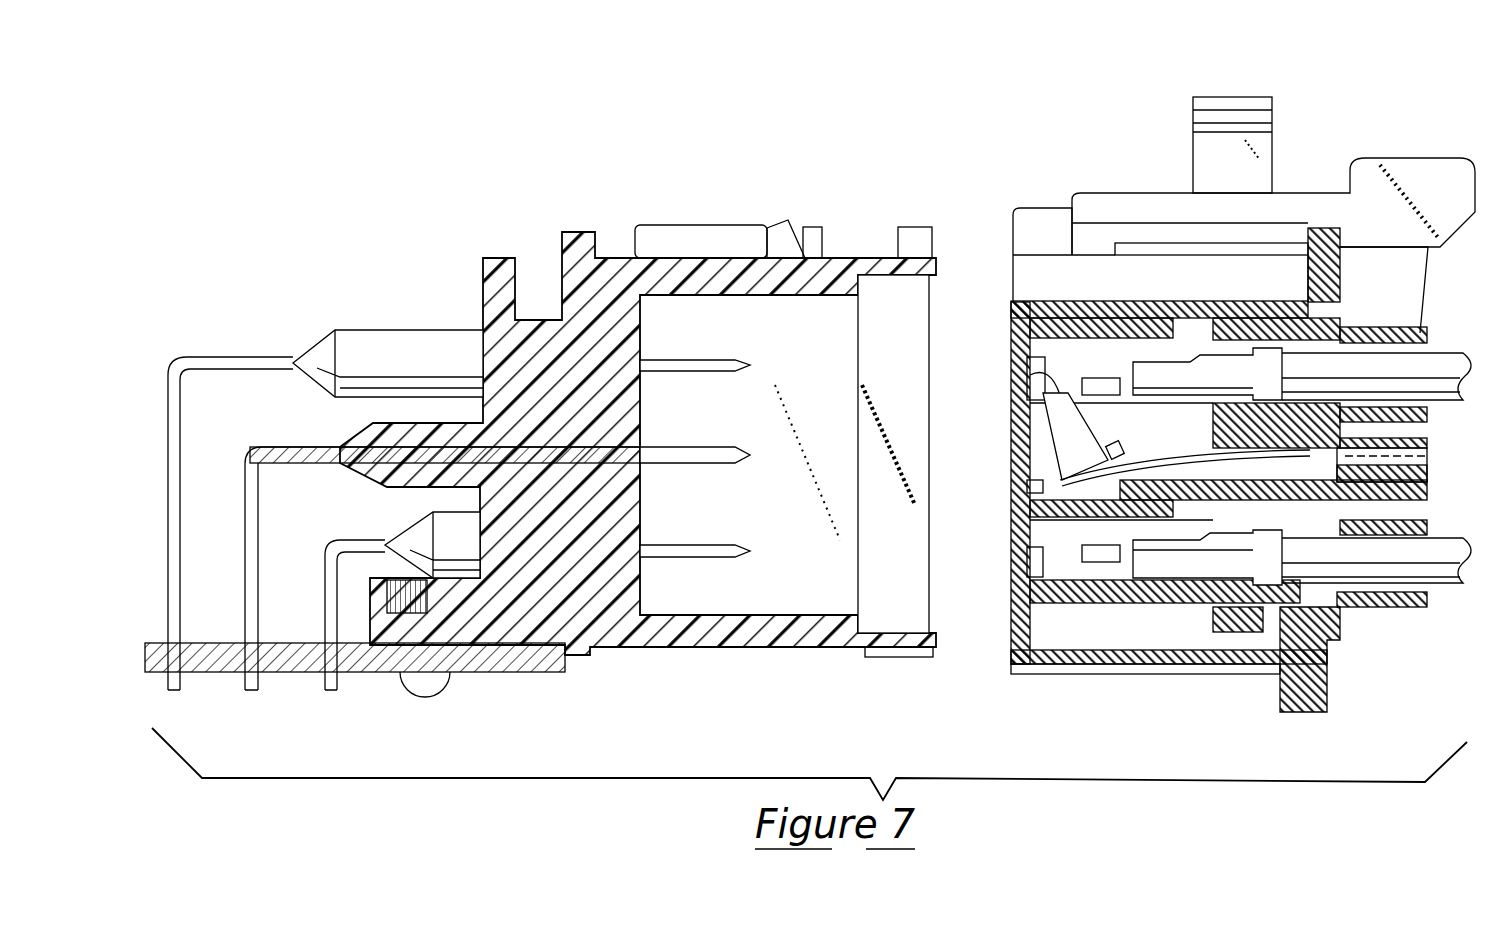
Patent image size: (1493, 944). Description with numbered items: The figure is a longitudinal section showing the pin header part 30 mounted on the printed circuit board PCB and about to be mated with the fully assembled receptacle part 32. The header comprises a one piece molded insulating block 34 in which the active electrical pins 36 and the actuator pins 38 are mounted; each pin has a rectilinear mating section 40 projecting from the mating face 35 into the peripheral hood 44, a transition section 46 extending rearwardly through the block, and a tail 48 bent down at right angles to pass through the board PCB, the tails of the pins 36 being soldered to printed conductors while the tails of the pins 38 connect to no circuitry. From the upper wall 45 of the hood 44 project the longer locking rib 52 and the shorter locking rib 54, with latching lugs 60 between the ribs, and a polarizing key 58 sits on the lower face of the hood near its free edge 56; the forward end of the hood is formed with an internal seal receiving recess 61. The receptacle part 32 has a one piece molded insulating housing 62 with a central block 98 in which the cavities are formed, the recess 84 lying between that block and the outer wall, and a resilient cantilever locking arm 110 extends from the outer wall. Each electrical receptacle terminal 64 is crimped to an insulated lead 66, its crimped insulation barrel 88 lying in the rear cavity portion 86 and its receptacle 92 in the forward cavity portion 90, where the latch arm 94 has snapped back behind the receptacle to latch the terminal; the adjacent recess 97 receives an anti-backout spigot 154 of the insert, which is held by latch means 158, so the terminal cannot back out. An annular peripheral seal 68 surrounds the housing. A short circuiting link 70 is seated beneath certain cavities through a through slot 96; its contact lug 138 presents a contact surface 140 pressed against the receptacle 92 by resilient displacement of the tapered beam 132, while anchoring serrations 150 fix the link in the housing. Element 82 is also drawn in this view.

The pin header part 30 is at (488, 222).
The receptacle part 32 is at (1390, 708).
The insulating block 34 is at (468, 300).
The mating face 35 is at (641, 390).
The active electrical pins 36 is at (712, 352).
The actuator pins 38 is at (670, 442).
The mating section 40 is at (648, 367).
The peripheral hood 44 is at (767, 625).
The upper wall 45 is at (862, 262).
The transition section 46 is at (577, 470).
The tail 48 is at (178, 500).
The locking rib 52 is at (660, 232).
The locking rib 54 is at (900, 240).
The free edge 56 is at (935, 263).
The polarizing key 58 is at (880, 660).
The latching lugs 60 is at (775, 245).
The seal receiving recess 61 is at (880, 290).
The insulating housing 62 is at (1435, 648).
The electrical receptacle terminals 64 is at (1295, 375).
The insulated electrical leads 66 is at (1450, 398).
The annular peripheral seal 68 is at (1240, 625).
The short circuiting links 70 is at (1040, 462).
The strain relief 82 is at (1430, 460).
The recess 84 is at (1035, 268).
The rear cavity portion 86 is at (1388, 330).
The crimped insulation barrel 88 is at (1170, 548).
The forward cavity portion 90 is at (1035, 360).
The receptacle 92 is at (1050, 560).
The latch arm 94 is at (1150, 322).
The through slot 96 is at (1150, 405).
The recess 97 is at (1195, 312).
The central block 98 is at (1103, 612).
The locking arm 110 is at (1230, 165).
The beam 132 is at (1122, 450).
The contact lug 138 is at (1075, 436).
The contact surface 140 is at (1040, 392).
The anchoring serrations 150 is at (1270, 490).
The anti-backout spigots 154 is at (1085, 312).
The latch means 158 is at (1040, 484).
The printed circuit board PCB is at (488, 675).